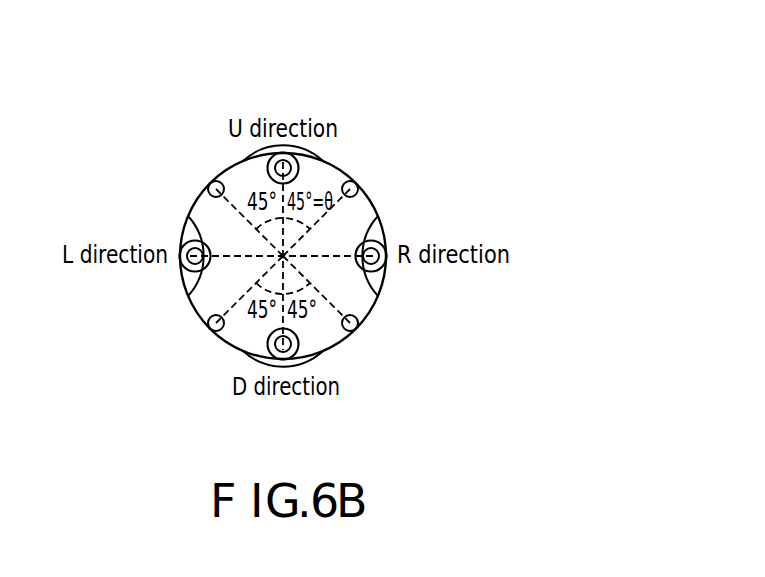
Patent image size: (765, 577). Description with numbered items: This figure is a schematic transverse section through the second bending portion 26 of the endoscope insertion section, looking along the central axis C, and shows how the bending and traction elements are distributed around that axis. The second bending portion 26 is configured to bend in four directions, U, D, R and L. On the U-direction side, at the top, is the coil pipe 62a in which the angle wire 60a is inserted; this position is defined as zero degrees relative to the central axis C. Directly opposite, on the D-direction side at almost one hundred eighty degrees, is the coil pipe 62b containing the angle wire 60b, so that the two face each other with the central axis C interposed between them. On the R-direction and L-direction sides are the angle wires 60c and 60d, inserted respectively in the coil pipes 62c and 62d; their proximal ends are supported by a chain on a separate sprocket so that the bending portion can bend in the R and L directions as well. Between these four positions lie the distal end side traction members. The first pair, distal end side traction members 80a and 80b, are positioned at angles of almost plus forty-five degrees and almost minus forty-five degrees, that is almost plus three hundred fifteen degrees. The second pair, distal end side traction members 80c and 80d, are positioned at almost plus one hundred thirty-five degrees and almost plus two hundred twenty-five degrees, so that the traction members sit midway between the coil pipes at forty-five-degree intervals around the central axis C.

The second bending portion 26 is at (381, 207).
The angle wire 60a is at (246, 160).
The angle wire 60b is at (243, 352).
The angle wire 60c is at (387, 239).
The angle wire 60d is at (181, 237).
The coil pipe 62a is at (321, 160).
The coil pipe 62b is at (323, 352).
The coil pipe 62c is at (385, 279).
The coil pipe 62d is at (184, 284).
The distal end side traction member 80a is at (357, 183).
The distal end side traction member 80b is at (208, 187).
The distal end side traction member 80c is at (358, 328).
The distal end side traction member 80d is at (209, 326).
The central axis C is at (291, 262).